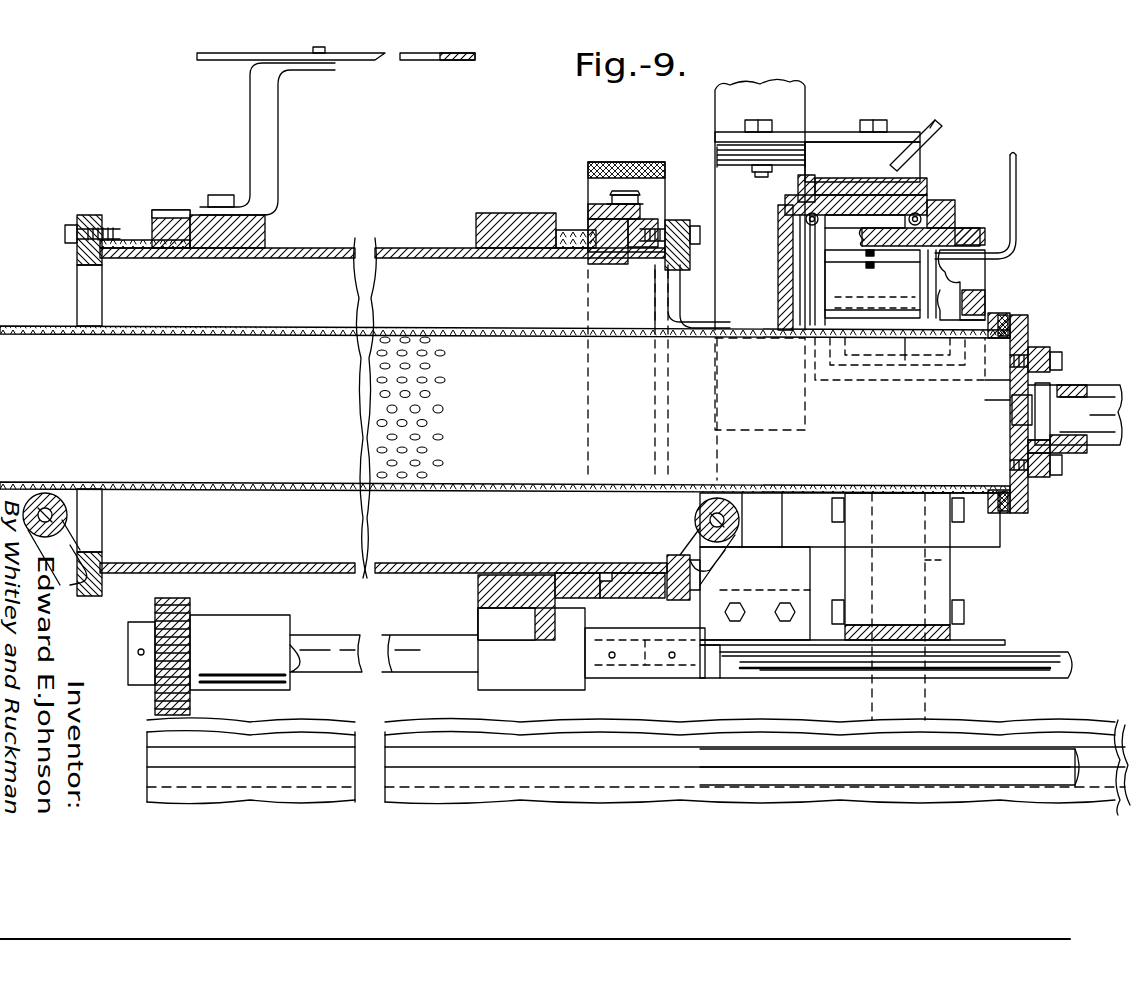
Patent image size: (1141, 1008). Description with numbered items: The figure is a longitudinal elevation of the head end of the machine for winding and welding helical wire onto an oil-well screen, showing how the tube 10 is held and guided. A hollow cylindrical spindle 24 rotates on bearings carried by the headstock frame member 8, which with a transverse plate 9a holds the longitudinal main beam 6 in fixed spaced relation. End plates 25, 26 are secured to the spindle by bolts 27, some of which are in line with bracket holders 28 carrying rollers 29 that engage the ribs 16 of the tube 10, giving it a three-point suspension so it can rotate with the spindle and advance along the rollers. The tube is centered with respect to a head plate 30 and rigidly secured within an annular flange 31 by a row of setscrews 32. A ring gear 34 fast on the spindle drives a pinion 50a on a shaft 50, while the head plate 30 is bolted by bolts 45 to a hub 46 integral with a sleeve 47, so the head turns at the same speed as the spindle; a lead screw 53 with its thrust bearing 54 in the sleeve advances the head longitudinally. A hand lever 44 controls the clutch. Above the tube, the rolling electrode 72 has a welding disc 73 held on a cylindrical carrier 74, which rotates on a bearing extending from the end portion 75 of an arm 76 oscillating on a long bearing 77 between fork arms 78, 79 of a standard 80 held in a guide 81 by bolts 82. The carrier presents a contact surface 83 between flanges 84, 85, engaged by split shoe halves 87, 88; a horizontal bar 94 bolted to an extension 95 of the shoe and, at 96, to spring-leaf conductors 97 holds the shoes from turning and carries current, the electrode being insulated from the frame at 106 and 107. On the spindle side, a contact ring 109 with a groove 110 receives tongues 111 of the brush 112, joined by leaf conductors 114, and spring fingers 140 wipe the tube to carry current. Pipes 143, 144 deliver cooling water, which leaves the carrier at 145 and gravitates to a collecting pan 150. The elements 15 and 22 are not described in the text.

The longitudinal main beam 6 is at (1098, 762).
The headstock frame member 8 is at (265, 224).
The transverse plate 9a is at (888, 625).
The tube 10 is at (182, 334).
The pipe wall 15 is at (209, 327).
The rib 16 is at (146, 326).
The perforations 22 is at (282, 334).
The hollow cylindrical spindle 24 is at (384, 248).
The end plate 25 is at (676, 220).
The end plate 26 is at (84, 215).
The bolt 27 is at (65, 240).
The bracket holder 28 is at (55, 538).
The roller 29 is at (60, 503).
The head plate 30 is at (1016, 318).
The annular flange 31 is at (995, 513).
The setscrew 32 is at (1003, 313).
The ring gear 34 is at (160, 210).
The hand lever 44 is at (402, 53).
The bolt 45 is at (1058, 356).
The hub 46 is at (1040, 470).
The sleeve 47 is at (1092, 390).
The shaft 50 is at (380, 640).
The pinion 50a is at (190, 708).
The lead screw 53 is at (1080, 445).
The thrust bearing 54 is at (1040, 405).
The electrode 72 is at (782, 205).
The welding disc 73 is at (797, 178).
The cylindrical carrier 74 is at (928, 205).
The end portion of arm 75 is at (955, 208).
The arm 76 is at (930, 338).
The long bearing 77 is at (852, 318).
The fork arm 78 is at (990, 400).
The fork arm 79 is at (790, 375).
The standard 80 is at (945, 565).
The guide 81 is at (945, 590).
The bolt 82 is at (832, 508).
The cylindrical contact surface 83 is at (868, 185).
The flange 84 is at (920, 180).
The flange 85 is at (815, 180).
The contact shoe half 87 is at (940, 126).
The contact shoe half 88 is at (800, 263).
The horizontal bar member 94 is at (790, 130).
The extension of shoe member 95 is at (880, 140).
The bolt connection 96 is at (717, 150).
The spring-leaf conductor member 97 is at (800, 82).
The insulation 106 is at (975, 295).
The insulation 107 is at (840, 338).
The annular contact ring 109 is at (600, 248).
The annular contact groove 110 is at (615, 248).
The semi-circular tongue 111 is at (590, 216).
The contact brush 112 is at (592, 205).
The leaf copper conductor 114 is at (623, 162).
The spring finger 140 is at (672, 298).
The water pipe 143 is at (1018, 190).
The water pipe 144 is at (932, 120).
The water outlet point 145 is at (800, 294).
The collecting pan 150 is at (945, 780).